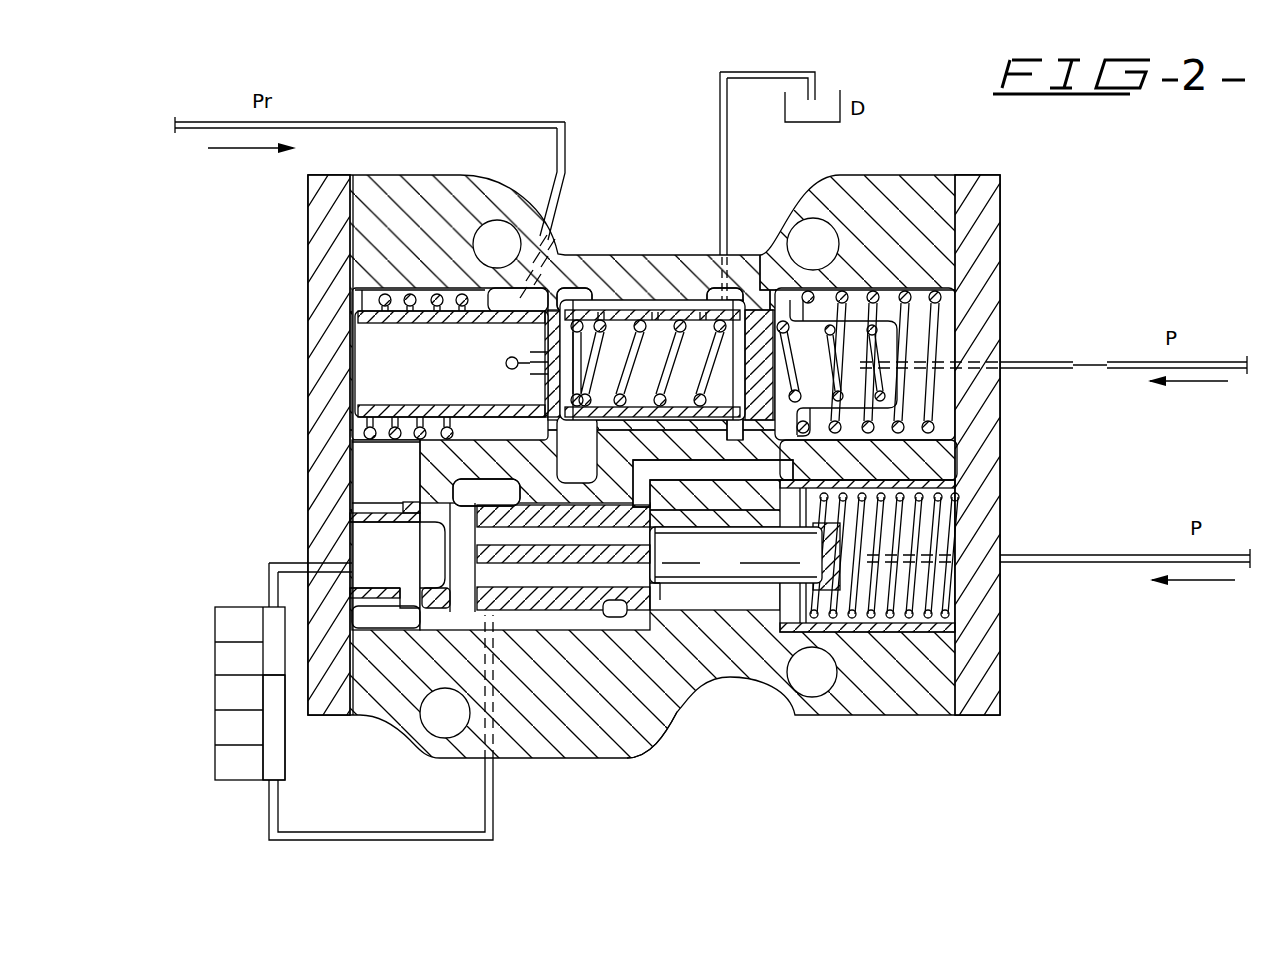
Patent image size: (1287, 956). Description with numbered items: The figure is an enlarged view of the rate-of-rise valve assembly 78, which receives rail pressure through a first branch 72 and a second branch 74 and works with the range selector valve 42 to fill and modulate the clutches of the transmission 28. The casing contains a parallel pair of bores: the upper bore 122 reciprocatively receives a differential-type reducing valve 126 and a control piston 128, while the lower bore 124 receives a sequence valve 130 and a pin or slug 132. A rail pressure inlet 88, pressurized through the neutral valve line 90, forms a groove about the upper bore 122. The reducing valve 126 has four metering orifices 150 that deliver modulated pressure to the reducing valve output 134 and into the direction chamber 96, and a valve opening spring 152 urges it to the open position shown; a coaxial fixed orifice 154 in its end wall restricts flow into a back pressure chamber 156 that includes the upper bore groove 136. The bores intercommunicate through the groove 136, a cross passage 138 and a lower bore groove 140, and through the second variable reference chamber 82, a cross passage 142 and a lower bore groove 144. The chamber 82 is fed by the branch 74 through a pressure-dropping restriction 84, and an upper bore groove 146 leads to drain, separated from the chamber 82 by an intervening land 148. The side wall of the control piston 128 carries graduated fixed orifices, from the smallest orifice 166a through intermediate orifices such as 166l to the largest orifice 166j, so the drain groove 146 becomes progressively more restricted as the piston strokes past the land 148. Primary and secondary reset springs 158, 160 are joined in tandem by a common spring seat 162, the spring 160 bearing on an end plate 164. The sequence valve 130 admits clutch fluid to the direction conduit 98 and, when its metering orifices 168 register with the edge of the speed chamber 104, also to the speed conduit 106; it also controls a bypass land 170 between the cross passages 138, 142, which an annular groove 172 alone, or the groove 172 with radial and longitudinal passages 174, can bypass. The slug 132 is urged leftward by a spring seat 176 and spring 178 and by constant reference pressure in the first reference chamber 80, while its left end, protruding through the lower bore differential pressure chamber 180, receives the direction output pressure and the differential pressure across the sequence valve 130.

The transmission 28 is at (227, 785).
The range selector valve 42 is at (275, 690).
The first branch 72 is at (1080, 556).
The second branch 74 is at (1040, 362).
The rate-of-rise valve assembly 78 is at (547, 770).
The first constant reference chamber 80 is at (940, 545).
The second variable reference pressure chamber 82 is at (950, 332).
The pressure-dropping restriction 84 is at (1088, 368).
The rail pressure inlet 88 is at (503, 300).
The neutral valve line 90 is at (570, 150).
The direction chamber 96 is at (372, 470).
The direction conduit 98 is at (275, 560).
The speed chamber 104 is at (425, 618).
The speed conduit 106 is at (483, 793).
The upper bore 122 is at (623, 310).
The lower bore 124 is at (536, 596).
The differential-type reducing valve 126 is at (452, 323).
The control piston 128 is at (553, 378).
The sequence valve 130 is at (440, 505).
The slug 132 is at (781, 560).
The reducing valve output 134 is at (408, 426).
The upper bore groove 136 is at (571, 292).
The cross passage 138 is at (588, 458).
The lower bore groove 140 is at (573, 605).
The cross passage 142 is at (808, 460).
The lower bore groove 144 is at (648, 655).
The upper bore drain groove 146 is at (735, 290).
The intervening land 148 is at (758, 300).
The metering orifices 150 is at (515, 385).
The valve opening spring 152 is at (360, 300).
The coaxial fixed orifice 154 is at (538, 362).
The back pressure chamber 156 is at (648, 363).
The primary reset spring 158 is at (885, 398).
The secondary reset spring 160 is at (945, 300).
The common spring seat 162 is at (790, 300).
The end plate 164 is at (985, 200).
The fixed orifice 166a is at (601, 310).
The fixed orifice 166l is at (655, 310).
The fixed orifice 166j is at (703, 310).
The metering orifices 168 is at (430, 598).
The bypass land 170 is at (612, 615).
The annular groove 172 is at (518, 480).
The radial and longitudinal passages 174 is at (473, 575).
The spring seat 176 is at (832, 525).
The spring 178 is at (957, 492).
The lower bore differential pressure chamber 180 is at (704, 606).